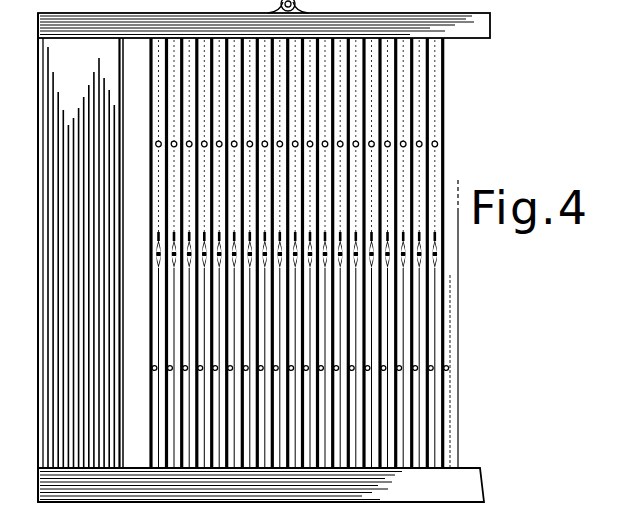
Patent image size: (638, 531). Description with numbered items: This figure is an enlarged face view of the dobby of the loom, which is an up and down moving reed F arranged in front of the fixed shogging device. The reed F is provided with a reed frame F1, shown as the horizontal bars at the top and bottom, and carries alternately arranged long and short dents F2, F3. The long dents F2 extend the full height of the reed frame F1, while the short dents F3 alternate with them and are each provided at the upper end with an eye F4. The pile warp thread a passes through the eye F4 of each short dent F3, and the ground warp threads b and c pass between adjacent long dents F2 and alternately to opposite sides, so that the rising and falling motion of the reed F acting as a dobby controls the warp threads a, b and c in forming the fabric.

The reed F is at (248, 251).
The reed frame F1 is at (478, 34).
The long dent F2 is at (444, 113).
The short dent F3 is at (158, 333).
The eye F4 is at (157, 266).
The pile warp thread a is at (156, 256).
The ground warp thread b is at (155, 144).
The ground warp thread c is at (152, 368).